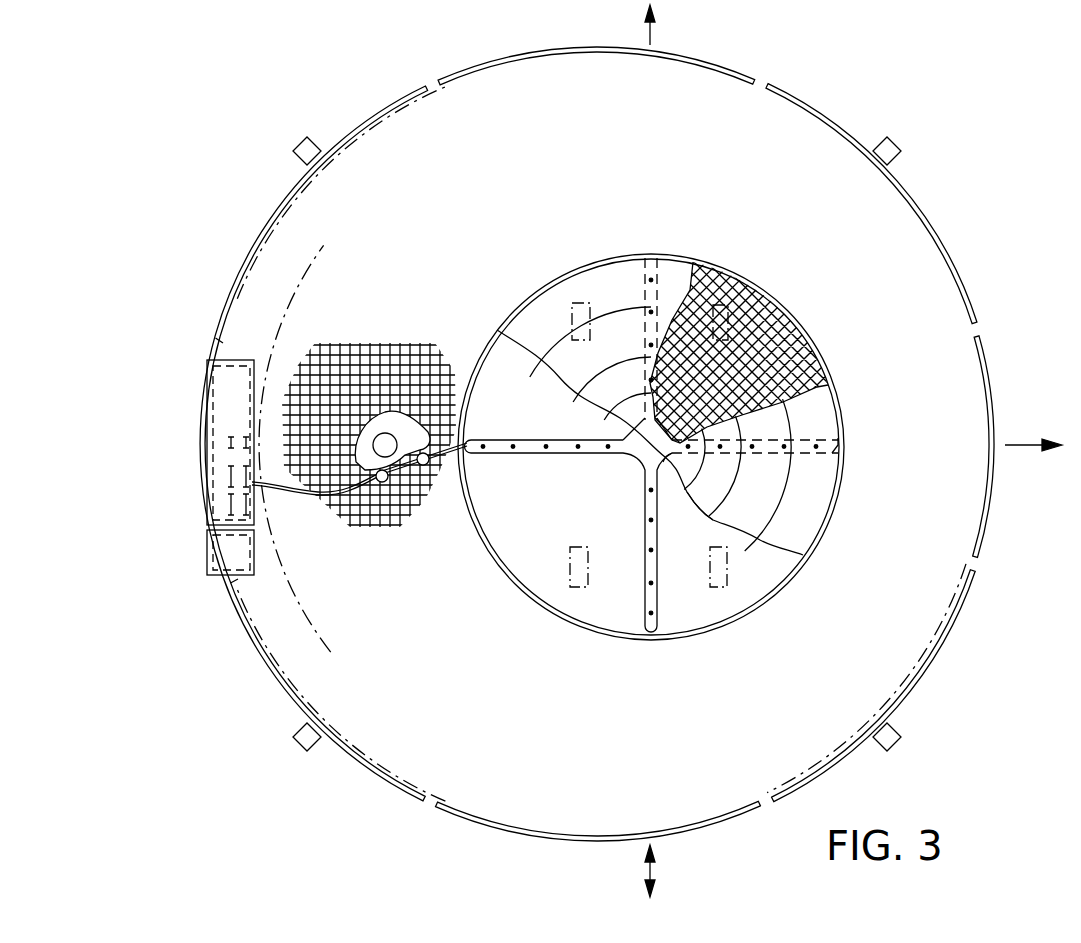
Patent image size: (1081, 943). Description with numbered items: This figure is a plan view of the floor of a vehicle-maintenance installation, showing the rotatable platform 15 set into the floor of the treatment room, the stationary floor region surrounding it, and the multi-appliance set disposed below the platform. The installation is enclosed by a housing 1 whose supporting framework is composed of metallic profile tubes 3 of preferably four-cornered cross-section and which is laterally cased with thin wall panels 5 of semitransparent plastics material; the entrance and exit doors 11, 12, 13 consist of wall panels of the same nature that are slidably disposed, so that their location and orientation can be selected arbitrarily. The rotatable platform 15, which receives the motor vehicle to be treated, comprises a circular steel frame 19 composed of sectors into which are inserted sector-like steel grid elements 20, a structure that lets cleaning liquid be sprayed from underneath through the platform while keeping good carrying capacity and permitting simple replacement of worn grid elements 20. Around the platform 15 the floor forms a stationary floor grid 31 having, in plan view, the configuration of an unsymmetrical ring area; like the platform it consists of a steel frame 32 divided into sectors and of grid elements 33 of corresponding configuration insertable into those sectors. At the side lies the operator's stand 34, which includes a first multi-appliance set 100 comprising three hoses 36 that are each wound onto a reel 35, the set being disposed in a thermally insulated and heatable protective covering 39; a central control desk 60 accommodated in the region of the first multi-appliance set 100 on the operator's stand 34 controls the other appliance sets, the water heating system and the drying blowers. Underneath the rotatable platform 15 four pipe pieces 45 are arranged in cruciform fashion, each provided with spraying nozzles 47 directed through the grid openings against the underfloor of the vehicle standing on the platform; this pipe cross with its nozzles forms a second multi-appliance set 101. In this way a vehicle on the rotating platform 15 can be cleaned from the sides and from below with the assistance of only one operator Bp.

The housing 1 is at (962, 189).
The metallic profile tubes 3 is at (300, 740).
The wall panels 5 is at (252, 655).
The entrance and exit door 11 is at (732, 816).
The entrance and exit door 12 is at (996, 416).
The entrance and exit door 13 is at (735, 68).
The rotatable platform 15 is at (818, 389).
The circular steel frame 19 is at (617, 303).
The grid elements 20 is at (803, 347).
The stationary floor grid 31 is at (242, 600).
The steel frame 32 is at (300, 287).
The grid elements 33 is at (360, 345).
The operator's stand 34 is at (285, 343).
The reel 35 is at (230, 473).
The hoses 36 is at (288, 487).
The protective covering 39 is at (207, 442).
The pipe pieces 45 is at (843, 462).
The spraying nozzles 47 is at (838, 488).
The central control desk 60 is at (222, 558).
The first multi-appliance set 100 is at (228, 400).
The second multi-appliance set 101 is at (625, 505).
The operator Bp is at (461, 428).